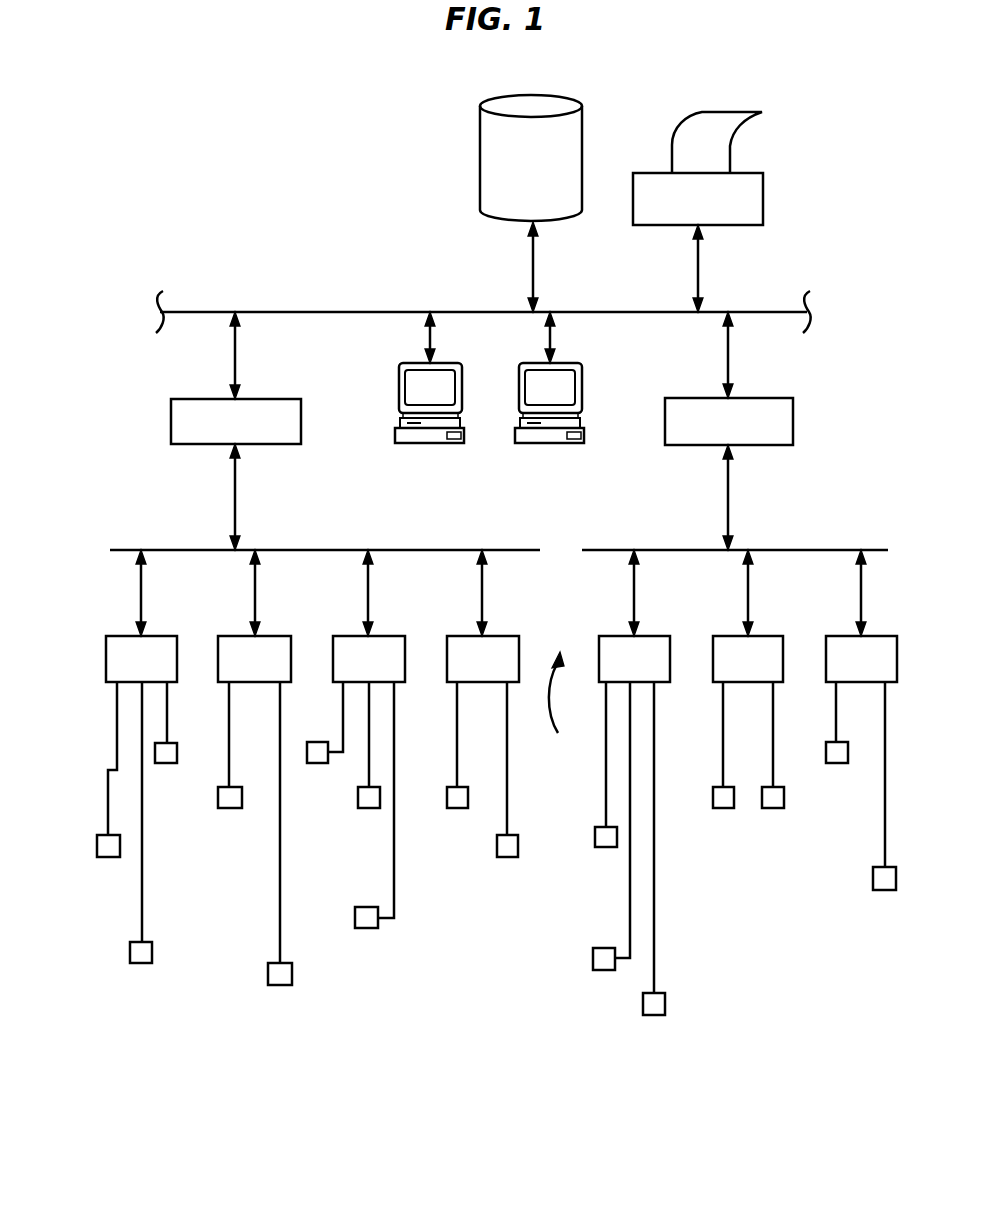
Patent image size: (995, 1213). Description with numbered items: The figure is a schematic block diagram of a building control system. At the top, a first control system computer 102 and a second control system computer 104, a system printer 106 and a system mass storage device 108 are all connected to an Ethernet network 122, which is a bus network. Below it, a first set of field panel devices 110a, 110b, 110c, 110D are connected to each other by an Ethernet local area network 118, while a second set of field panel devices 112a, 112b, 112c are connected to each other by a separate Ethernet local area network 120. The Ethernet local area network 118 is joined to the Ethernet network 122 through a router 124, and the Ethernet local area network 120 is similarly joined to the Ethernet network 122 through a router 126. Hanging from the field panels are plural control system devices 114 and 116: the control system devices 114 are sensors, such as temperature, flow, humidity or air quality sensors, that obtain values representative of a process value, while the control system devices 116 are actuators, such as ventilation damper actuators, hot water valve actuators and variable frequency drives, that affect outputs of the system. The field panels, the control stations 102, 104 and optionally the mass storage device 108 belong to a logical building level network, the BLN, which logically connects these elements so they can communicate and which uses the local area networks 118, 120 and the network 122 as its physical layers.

The first control system computer 102 is at (399, 384).
The second control system computer 104 is at (582, 385).
The system printer 106 is at (763, 195).
The system mass storage device 108 is at (480, 137).
The field panel device 110a is at (161, 670).
The field panel device 110b is at (274, 670).
The field panel device 110c is at (389, 670).
The field panel device 110D is at (503, 670).
The field panel device 112a is at (654, 670).
The field panel device 112b is at (768, 670).
The field panel device 112c is at (881, 670).
The control system device 114 is at (104, 857).
The control system device 116 is at (137, 963).
The Ethernet local area network 118 is at (312, 550).
The Ethernet local area network 120 is at (670, 550).
The Ethernet network 122 is at (325, 312).
The router 124 is at (171, 415).
The router 126 is at (793, 416).
The building level network BLN is at (563, 706).